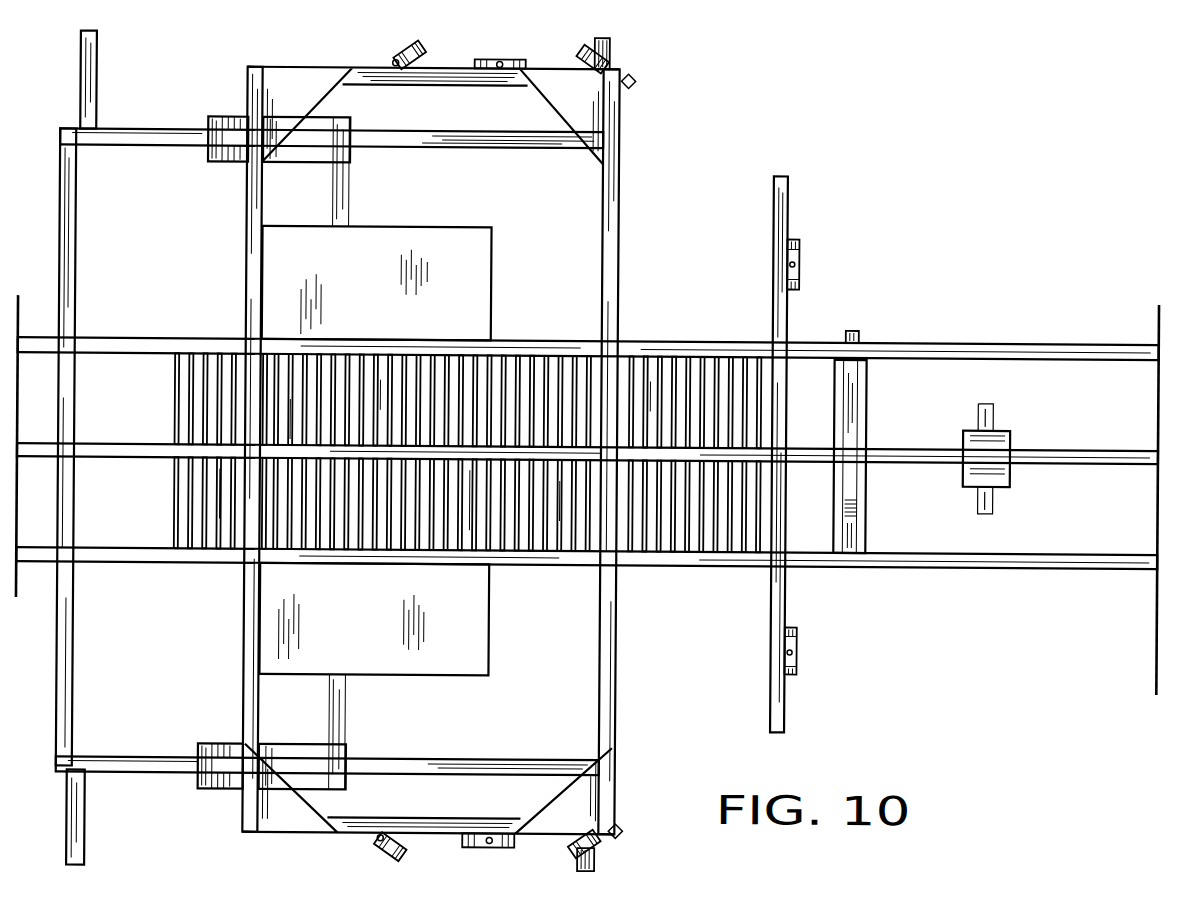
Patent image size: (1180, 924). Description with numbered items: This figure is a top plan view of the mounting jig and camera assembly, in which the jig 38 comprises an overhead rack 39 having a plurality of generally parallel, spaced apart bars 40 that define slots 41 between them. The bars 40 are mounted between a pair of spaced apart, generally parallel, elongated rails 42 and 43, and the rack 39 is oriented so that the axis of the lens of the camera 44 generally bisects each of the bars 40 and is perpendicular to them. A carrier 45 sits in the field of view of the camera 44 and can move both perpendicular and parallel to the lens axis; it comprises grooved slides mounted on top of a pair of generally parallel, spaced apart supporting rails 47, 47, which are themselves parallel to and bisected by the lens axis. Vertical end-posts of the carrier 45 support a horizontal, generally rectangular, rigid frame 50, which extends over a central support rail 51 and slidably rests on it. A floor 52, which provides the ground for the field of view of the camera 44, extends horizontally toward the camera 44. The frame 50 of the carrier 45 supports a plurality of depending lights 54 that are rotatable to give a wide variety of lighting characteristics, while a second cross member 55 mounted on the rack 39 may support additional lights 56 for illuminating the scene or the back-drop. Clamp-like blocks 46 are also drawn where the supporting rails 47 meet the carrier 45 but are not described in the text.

The jig 38 is at (469, 465).
The overhead rack 39 is at (711, 354).
The bars 40 is at (751, 550).
The slots 41 is at (741, 549).
The rail 42 is at (896, 345).
The rail 43 is at (945, 538).
The camera 44 is at (1010, 430).
The carrier 45 is at (455, 451).
The clamp 46 is at (213, 119).
The supporting rails 47 is at (160, 131).
The frame 50 is at (619, 247).
The central support rail 51 is at (912, 430).
The floor 52 is at (492, 666).
The lights 54 is at (580, 47).
The second cross member 55 is at (793, 196).
The additional lights 56 is at (804, 258).